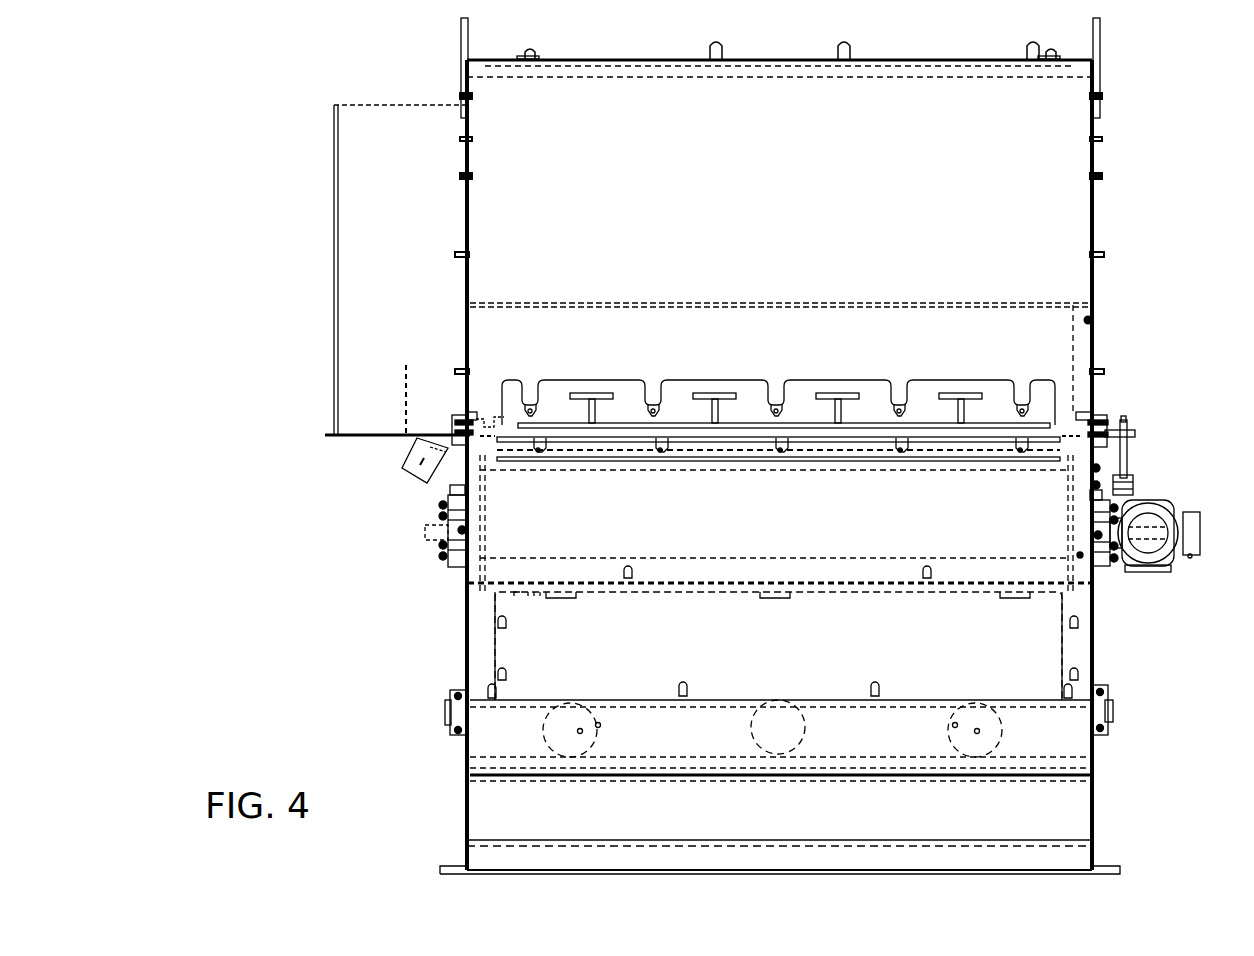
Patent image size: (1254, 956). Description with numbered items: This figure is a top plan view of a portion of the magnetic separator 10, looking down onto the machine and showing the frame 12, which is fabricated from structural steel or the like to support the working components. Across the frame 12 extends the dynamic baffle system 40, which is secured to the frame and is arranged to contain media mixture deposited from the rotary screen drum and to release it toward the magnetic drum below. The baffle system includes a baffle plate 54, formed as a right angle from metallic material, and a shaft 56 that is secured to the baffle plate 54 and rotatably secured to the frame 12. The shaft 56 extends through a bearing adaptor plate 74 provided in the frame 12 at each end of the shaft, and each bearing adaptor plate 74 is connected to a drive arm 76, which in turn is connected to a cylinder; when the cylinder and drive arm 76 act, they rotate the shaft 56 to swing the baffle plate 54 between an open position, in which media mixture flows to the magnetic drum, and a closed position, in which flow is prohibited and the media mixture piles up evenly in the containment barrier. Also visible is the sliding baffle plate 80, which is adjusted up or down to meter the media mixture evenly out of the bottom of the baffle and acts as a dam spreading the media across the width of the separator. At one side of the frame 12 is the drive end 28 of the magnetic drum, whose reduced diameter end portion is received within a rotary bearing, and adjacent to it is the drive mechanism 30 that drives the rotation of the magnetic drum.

The magnetic separator 10 is at (1136, 117).
The frame 12 is at (464, 78).
The drive end 28 is at (452, 568).
The drive mechanism 30 is at (1188, 510).
The dynamic baffle system 40 is at (792, 372).
The baffle plate 54 is at (627, 464).
The shaft 56 is at (558, 444).
The bearing adaptor plate 74 is at (460, 418).
The drive arm 76 is at (1125, 455).
The sliding baffle plate 80 is at (741, 388).